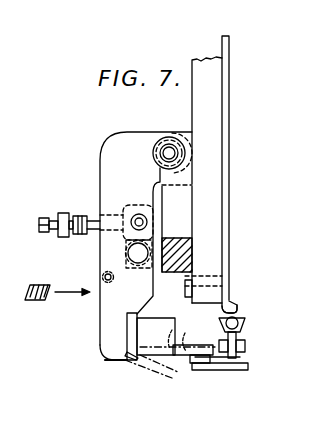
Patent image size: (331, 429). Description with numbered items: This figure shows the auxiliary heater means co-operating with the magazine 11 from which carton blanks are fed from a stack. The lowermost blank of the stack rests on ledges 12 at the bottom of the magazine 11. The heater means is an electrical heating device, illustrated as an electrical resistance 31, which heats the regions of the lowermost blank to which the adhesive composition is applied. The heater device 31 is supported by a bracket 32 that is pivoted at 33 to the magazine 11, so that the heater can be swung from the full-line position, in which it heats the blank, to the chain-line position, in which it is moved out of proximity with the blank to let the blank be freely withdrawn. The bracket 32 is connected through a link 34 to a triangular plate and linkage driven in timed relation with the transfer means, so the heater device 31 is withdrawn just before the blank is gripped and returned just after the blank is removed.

The magazine 11 is at (229, 114).
The ledges 12 is at (232, 312).
The electrical resistance 31 is at (238, 331).
The bracket 32 is at (105, 333).
The pivot 33 is at (168, 150).
The link 34 is at (99, 222).